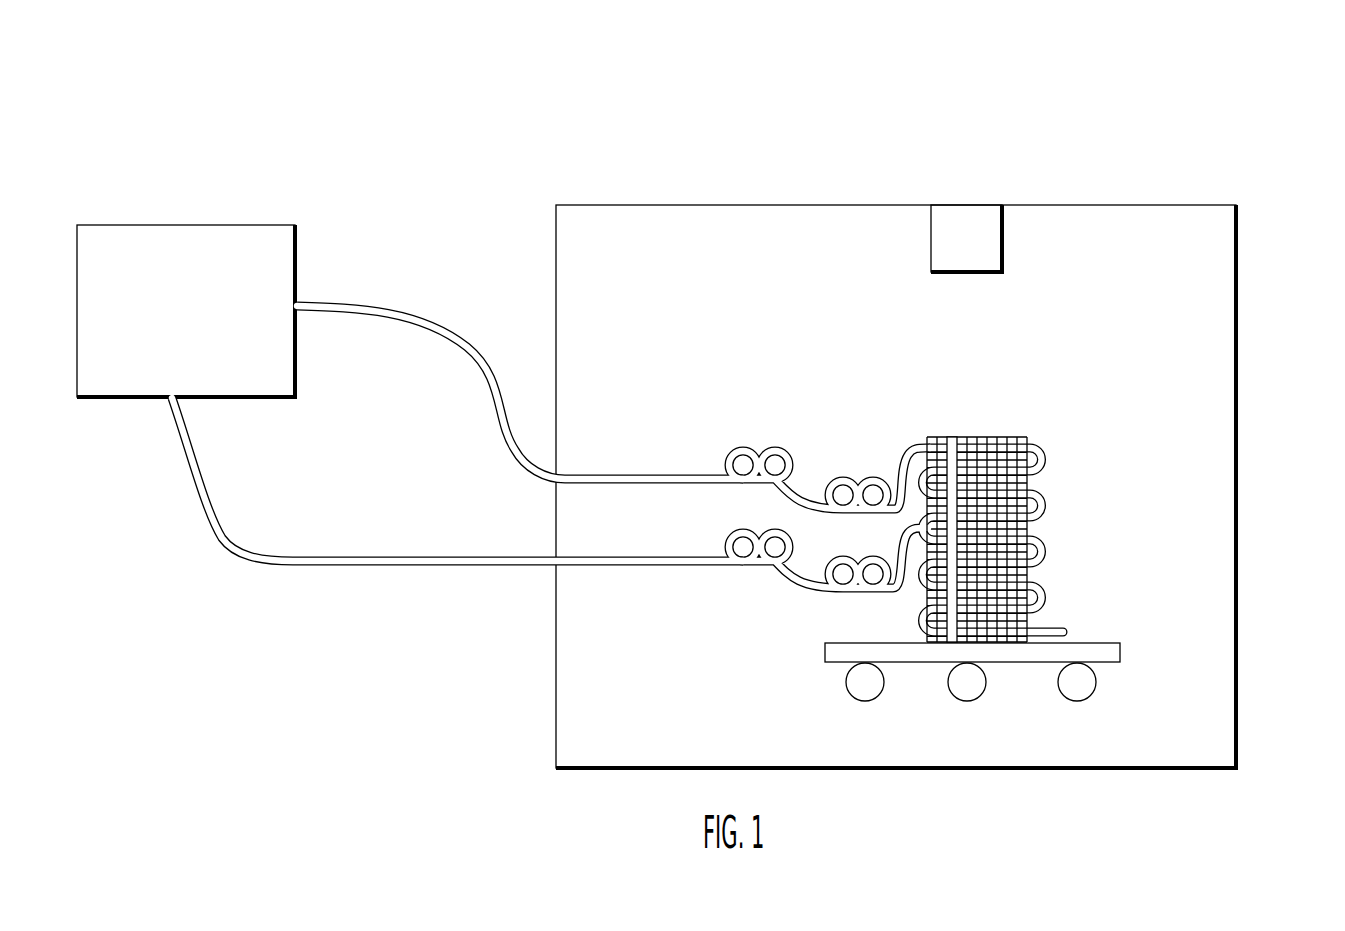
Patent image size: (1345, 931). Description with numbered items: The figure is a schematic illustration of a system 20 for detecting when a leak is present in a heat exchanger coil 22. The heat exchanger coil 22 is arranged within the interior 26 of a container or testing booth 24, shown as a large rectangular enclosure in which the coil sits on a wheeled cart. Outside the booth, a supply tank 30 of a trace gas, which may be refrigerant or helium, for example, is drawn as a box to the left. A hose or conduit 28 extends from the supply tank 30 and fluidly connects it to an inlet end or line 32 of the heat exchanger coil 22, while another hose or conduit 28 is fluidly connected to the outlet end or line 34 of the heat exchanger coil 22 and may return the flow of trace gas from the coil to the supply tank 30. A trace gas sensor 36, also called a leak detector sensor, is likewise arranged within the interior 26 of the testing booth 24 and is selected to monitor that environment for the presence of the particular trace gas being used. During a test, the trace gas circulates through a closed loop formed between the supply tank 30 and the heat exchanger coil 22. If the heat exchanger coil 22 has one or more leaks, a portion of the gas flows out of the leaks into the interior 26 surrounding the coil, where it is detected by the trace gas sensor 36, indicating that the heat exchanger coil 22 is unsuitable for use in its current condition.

The system 20 is at (1265, 71).
The heat exchanger coil 22 is at (646, 503).
The testing booth 24 is at (929, 486).
The interior 26 is at (628, 247).
The conduit 28 is at (457, 395).
The supply tank 30 is at (186, 311).
The inlet end 32 is at (829, 437).
The outlet end 34 is at (828, 583).
The trace gas sensor 36 is at (966, 238).